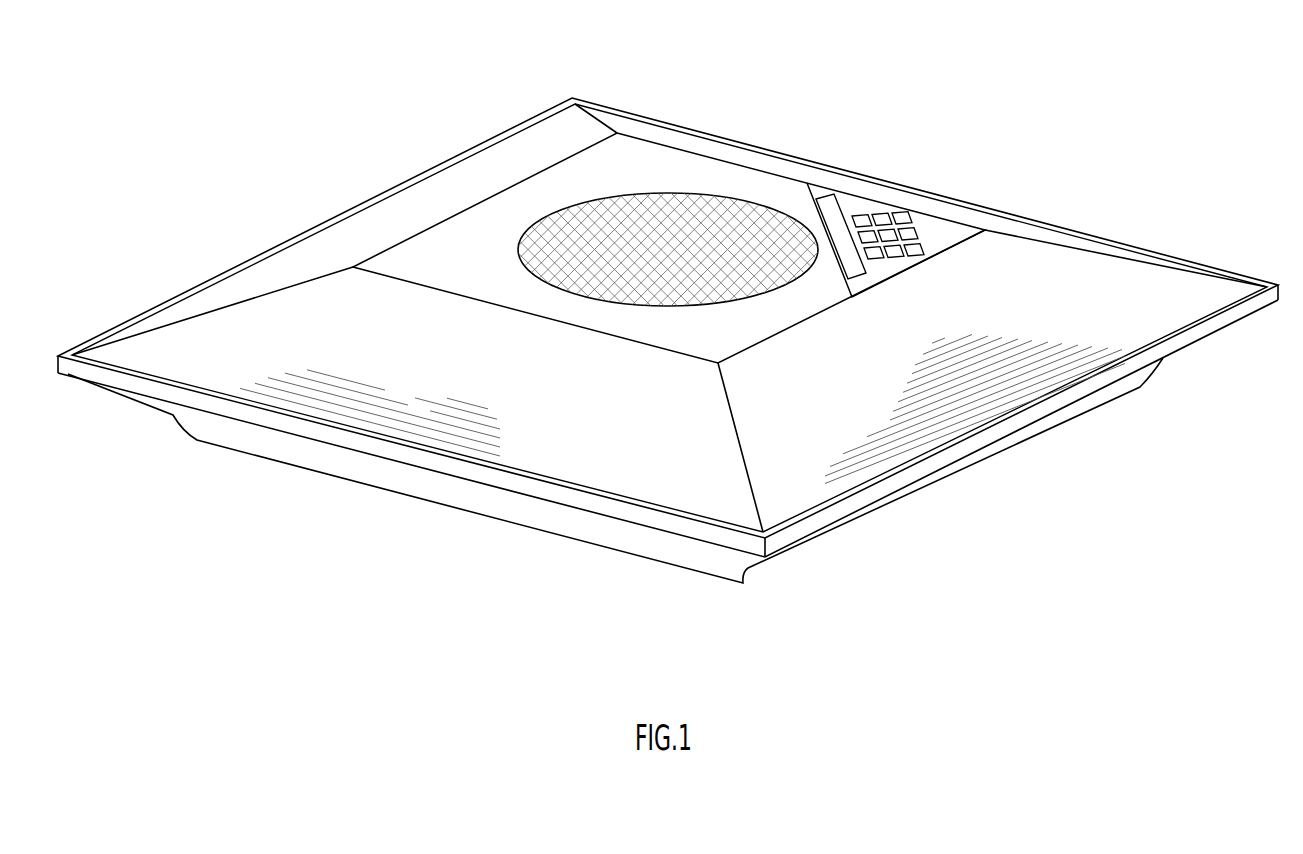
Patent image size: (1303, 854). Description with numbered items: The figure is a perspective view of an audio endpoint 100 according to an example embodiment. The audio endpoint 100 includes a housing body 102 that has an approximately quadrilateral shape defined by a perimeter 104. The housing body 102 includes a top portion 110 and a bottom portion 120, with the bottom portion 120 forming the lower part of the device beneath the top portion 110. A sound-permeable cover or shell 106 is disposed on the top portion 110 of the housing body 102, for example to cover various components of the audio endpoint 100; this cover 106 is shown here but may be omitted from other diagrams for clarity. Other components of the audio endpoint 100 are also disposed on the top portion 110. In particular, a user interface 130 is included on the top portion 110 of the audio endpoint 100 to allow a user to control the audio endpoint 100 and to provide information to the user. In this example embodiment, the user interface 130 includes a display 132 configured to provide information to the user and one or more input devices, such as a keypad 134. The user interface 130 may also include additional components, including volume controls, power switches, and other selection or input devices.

The audio endpoint 100 is at (198, 104).
The housing body 102 is at (656, 535).
The perimeter 104 is at (1033, 402).
The sound-permeable cover 106 is at (697, 197).
The top portion 110 is at (437, 250).
The bottom portion 120 is at (332, 476).
The user interface 130 is at (928, 229).
The display 132 is at (824, 199).
The keypad 134 is at (902, 214).